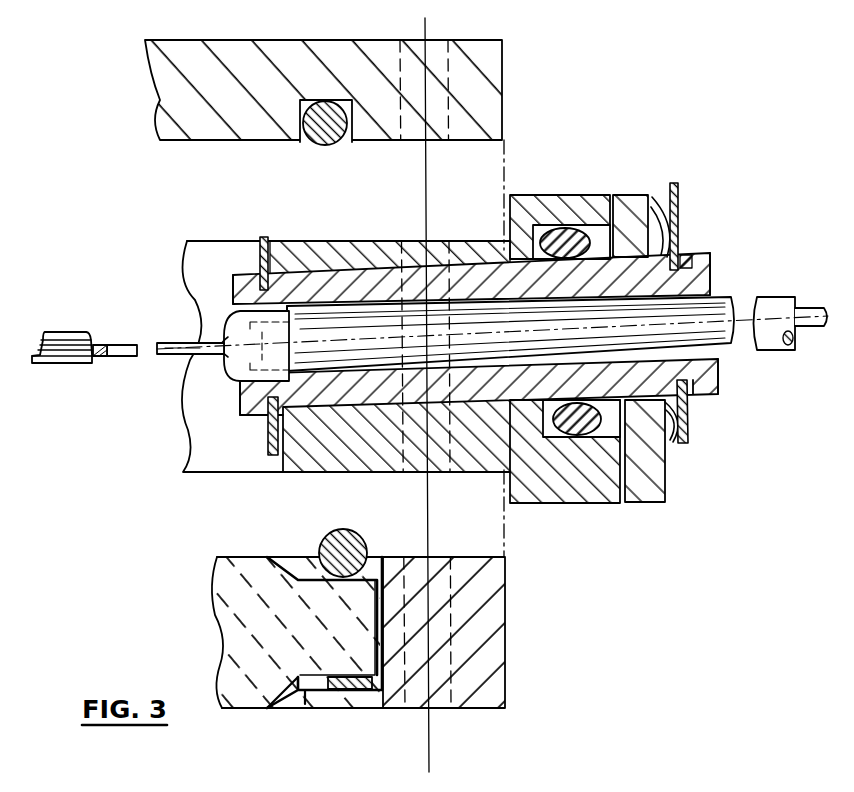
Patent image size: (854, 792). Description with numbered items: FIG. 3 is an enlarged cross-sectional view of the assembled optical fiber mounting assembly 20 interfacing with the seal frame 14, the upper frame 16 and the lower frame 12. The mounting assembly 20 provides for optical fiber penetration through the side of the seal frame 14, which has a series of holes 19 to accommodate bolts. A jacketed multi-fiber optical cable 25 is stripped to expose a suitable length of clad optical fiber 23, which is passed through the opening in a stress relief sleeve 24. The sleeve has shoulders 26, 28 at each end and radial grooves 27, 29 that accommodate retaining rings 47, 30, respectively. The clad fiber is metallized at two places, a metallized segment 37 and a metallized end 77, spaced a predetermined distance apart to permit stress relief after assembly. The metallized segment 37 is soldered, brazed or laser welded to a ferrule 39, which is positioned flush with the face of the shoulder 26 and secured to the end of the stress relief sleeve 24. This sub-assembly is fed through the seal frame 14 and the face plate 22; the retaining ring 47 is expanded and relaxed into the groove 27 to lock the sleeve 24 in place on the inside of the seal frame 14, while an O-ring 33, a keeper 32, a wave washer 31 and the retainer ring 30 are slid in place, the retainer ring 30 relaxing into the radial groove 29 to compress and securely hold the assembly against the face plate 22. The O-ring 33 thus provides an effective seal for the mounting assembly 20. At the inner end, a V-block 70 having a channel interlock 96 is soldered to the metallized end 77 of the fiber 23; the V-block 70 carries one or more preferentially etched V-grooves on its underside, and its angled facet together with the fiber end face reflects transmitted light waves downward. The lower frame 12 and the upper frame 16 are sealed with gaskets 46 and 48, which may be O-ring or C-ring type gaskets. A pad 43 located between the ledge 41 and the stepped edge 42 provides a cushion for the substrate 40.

The lower frame 12 is at (507, 623).
The seal frame 14 is at (457, 241).
The upper frame 16 is at (160, 82).
The holes 19 is at (410, 136).
The optical fiber mounting assembly 20 is at (632, 587).
The face plate 22 is at (541, 195).
The clad optical fiber 23 is at (115, 360).
The stress relief sleeve 24 is at (338, 268).
The multi-fiber optical cable 25 is at (317, 370).
The shoulder 26 is at (256, 420).
The radial groove 27 is at (288, 272).
The shoulder 28 is at (712, 262).
The radial groove 29 is at (694, 254).
The retainer ring 30 is at (684, 218).
The wave washer 31 is at (680, 186).
The keeper 32 is at (632, 195).
The O-ring 33 is at (578, 229).
The metallized segment 37 is at (218, 362).
The ferrule 39 is at (222, 292).
The substrate 40 is at (215, 619).
The ledge 41 is at (322, 708).
The stepped edge 42 is at (310, 592).
The pad 43 is at (352, 692).
The gasket 46 is at (321, 545).
The retaining ring 47 is at (262, 238).
The gasket 48 is at (312, 142).
The V-block 70 is at (66, 366).
The metallized end 77 is at (103, 360).
The channel interlock 96 is at (74, 332).